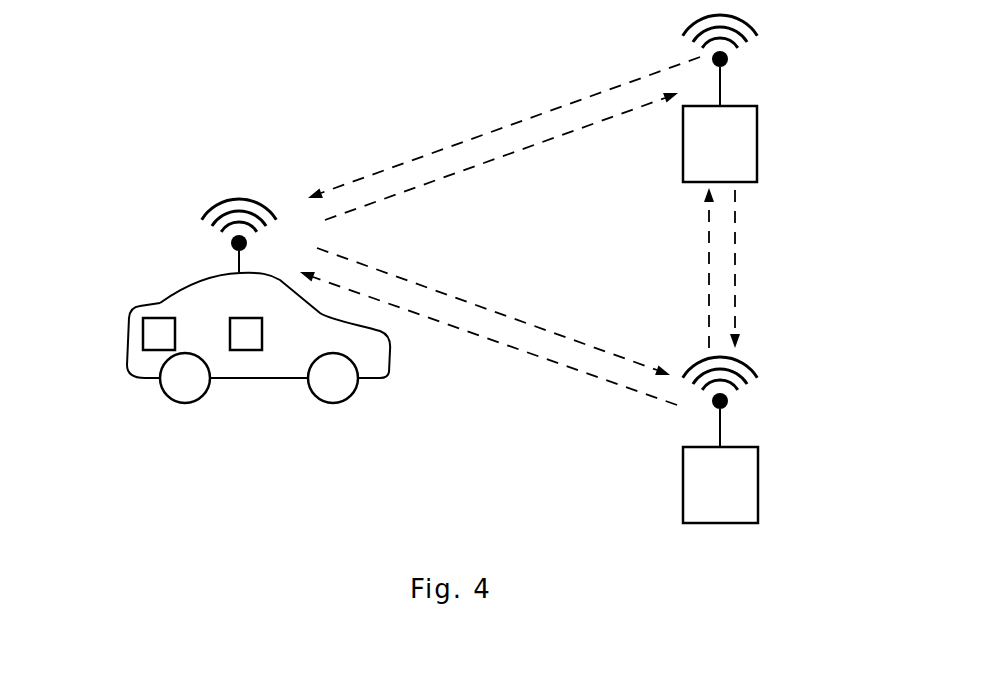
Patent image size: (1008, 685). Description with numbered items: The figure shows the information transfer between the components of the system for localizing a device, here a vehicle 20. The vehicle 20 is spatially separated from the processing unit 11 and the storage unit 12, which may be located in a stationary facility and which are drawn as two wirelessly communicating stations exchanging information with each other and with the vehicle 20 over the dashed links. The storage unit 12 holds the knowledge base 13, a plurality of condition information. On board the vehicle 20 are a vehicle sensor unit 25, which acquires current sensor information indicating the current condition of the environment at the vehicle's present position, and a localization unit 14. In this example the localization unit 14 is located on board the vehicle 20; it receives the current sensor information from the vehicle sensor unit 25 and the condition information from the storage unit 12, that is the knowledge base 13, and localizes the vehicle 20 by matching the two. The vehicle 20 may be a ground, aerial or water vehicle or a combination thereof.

The processing unit 11 is at (738, 482).
The storage unit 12 is at (778, 98).
The knowledge base 13 is at (740, 142).
The localization unit 14 is at (247, 340).
The vehicle 20 is at (140, 277).
The vehicle sensor unit 25 is at (153, 334).